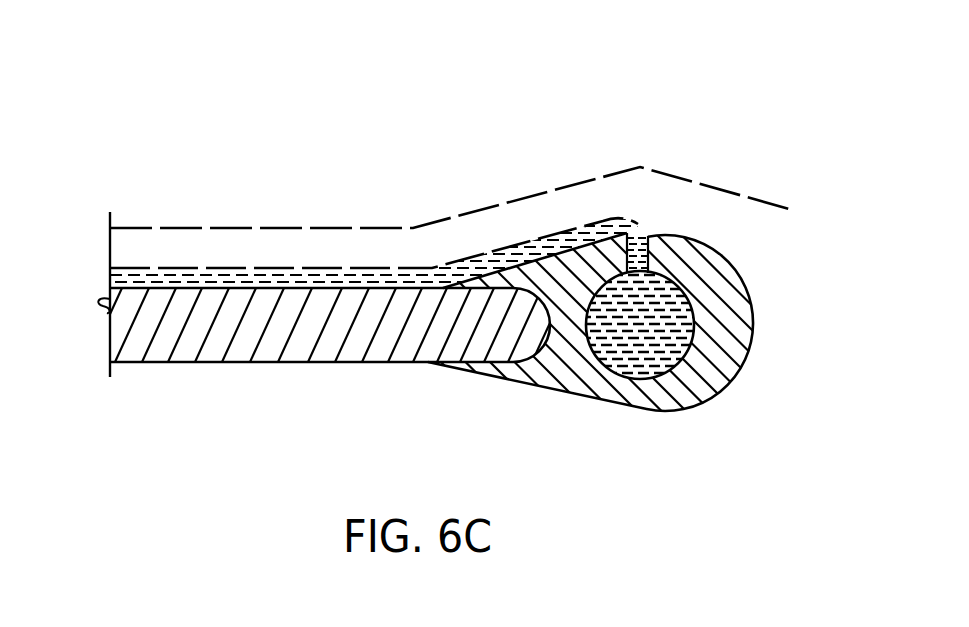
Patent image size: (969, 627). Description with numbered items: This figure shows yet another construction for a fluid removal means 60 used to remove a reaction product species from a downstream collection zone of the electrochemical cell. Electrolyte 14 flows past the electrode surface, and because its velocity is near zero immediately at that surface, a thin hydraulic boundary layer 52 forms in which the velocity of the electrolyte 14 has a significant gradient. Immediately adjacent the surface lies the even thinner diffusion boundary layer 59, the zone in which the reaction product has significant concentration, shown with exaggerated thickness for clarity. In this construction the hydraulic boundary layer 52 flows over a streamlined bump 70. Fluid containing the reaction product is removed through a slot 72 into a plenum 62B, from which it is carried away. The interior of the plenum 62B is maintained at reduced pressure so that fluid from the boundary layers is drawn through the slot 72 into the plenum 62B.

The electrolyte 14 is at (215, 103).
The fluid removal means 60 is at (509, 96).
The hydraulic boundary layer 52 is at (188, 228).
The diffusion boundary layer 59 is at (323, 268).
The streamlined bump 70 is at (558, 253).
The slot 72 is at (638, 235).
The plenum 62B is at (639, 357).